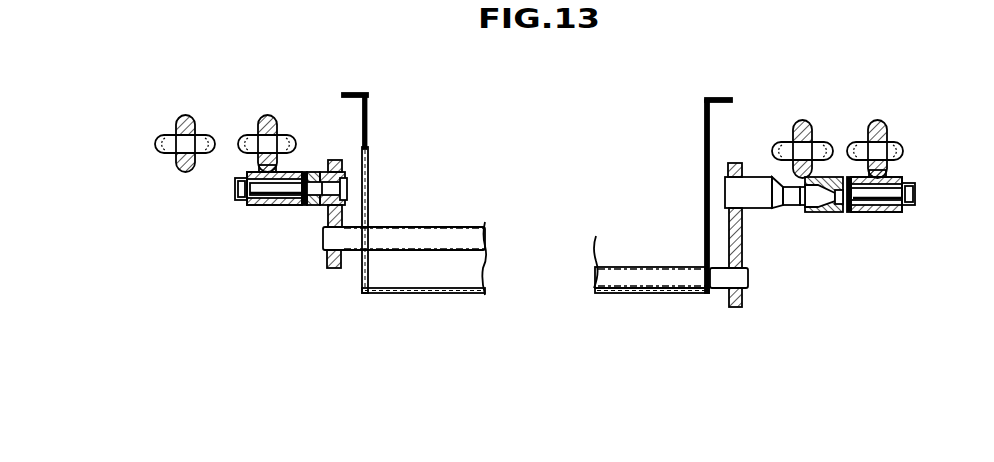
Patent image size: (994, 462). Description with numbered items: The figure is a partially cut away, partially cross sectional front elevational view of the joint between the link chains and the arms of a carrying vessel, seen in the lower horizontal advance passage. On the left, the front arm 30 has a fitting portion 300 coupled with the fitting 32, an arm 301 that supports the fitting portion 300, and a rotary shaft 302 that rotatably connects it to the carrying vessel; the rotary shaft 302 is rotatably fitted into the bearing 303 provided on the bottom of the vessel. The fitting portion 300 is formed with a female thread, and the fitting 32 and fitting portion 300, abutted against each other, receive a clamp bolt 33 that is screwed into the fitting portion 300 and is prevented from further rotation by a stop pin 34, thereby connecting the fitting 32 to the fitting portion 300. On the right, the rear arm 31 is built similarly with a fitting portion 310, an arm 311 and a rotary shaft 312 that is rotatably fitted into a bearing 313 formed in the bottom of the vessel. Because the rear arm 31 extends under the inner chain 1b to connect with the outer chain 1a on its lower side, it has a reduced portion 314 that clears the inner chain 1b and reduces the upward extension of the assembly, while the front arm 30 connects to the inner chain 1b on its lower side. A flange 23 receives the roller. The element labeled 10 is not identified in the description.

The outer chain 1a is at (189, 115).
The inner chain 1b is at (270, 115).
The pin base 10 is at (252, 168).
The flange 23 is at (356, 93).
The front arm 30 is at (252, 207).
The rear arm 31 is at (826, 214).
The fitting 32 is at (265, 206).
The clamp bolt 33 is at (240, 200).
The stop pin 34 is at (848, 214).
The fitting portion 300 is at (318, 172).
The arm 301 is at (336, 270).
The rotary shaft 302 is at (328, 238).
The bearing 303 is at (430, 250).
The fitting portion 310 is at (860, 212).
The arm 311 is at (739, 308).
The rotary shaft 312 is at (750, 276).
The bearing 313 is at (688, 294).
The reduced portion 314 is at (792, 206).